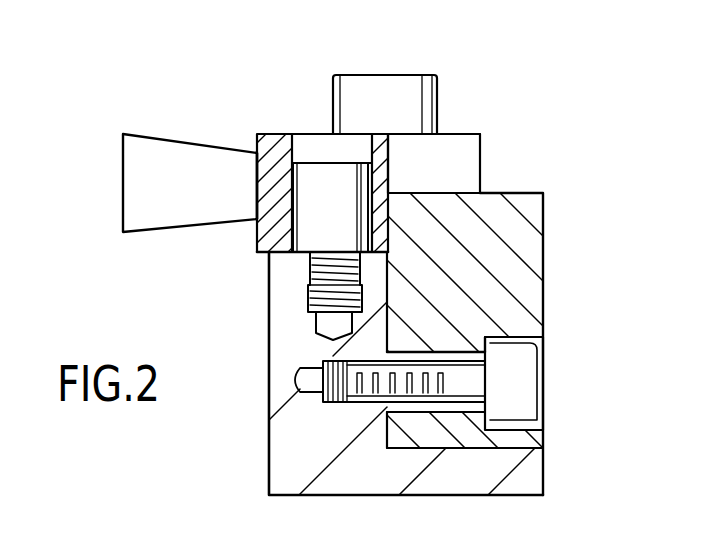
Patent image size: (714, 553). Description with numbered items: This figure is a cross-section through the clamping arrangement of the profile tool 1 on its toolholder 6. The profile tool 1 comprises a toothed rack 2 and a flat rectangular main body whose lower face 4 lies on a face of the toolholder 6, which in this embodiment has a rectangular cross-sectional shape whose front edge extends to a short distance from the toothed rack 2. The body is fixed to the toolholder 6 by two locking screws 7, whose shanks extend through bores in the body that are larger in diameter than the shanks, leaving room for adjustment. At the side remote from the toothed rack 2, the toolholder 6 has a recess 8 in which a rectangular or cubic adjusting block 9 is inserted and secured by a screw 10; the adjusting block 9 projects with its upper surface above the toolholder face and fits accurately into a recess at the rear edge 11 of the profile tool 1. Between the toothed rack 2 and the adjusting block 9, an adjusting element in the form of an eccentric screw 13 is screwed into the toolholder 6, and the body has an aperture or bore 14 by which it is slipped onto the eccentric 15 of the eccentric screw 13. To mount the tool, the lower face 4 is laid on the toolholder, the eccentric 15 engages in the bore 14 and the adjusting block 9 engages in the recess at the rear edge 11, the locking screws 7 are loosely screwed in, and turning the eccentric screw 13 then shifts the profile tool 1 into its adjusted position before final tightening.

The profile tool 1 is at (465, 157).
The toothed rack 2 is at (168, 240).
The lower face 4 is at (257, 212).
The toolholder 6 is at (293, 450).
The locking screw 7 is at (413, 87).
The recess 8 is at (438, 448).
The adjusting block 9 is at (523, 286).
The screw 10 is at (525, 392).
The rear edge 11 is at (481, 158).
The eccentric screw 13 is at (322, 233).
The bore 14 is at (293, 146).
The eccentric 15 is at (348, 200).